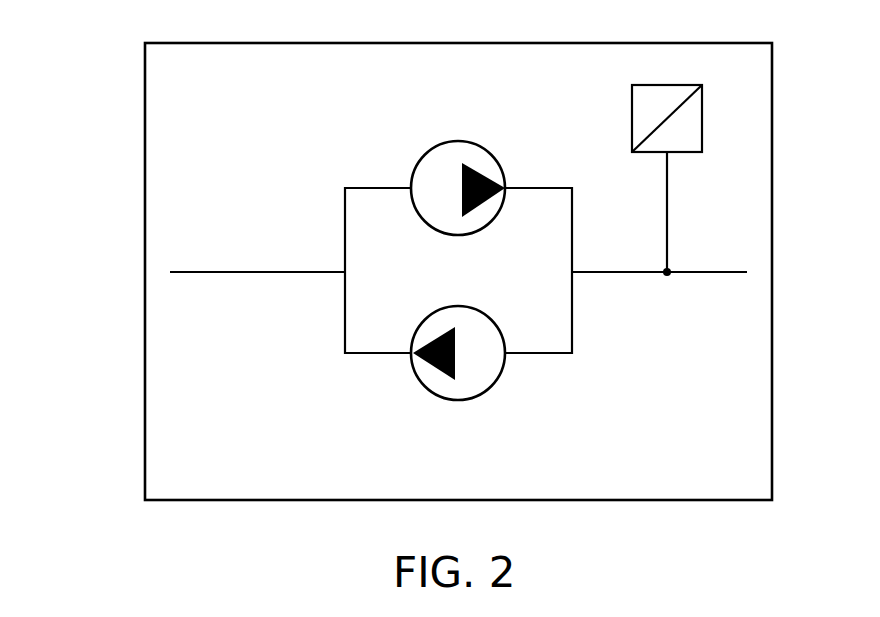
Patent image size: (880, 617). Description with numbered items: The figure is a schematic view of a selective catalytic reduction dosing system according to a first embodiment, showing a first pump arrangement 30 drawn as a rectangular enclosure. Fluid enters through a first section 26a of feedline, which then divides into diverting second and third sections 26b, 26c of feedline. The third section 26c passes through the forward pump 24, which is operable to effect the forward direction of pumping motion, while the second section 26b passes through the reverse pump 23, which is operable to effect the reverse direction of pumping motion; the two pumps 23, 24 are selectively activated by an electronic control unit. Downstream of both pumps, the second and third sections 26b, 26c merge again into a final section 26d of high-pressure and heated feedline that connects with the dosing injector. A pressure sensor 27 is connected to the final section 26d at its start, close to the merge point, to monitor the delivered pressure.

The fluid circuit module 30 is at (140, 55).
The first section of feedline 26a is at (200, 271).
The second section of feedline 26b is at (363, 355).
The third section of feedline 26c is at (363, 187).
The final section of feedline 26d is at (715, 272).
The forward pump 24 is at (448, 143).
The reverse pump 23 is at (448, 398).
The pressure sensor 27 is at (682, 85).